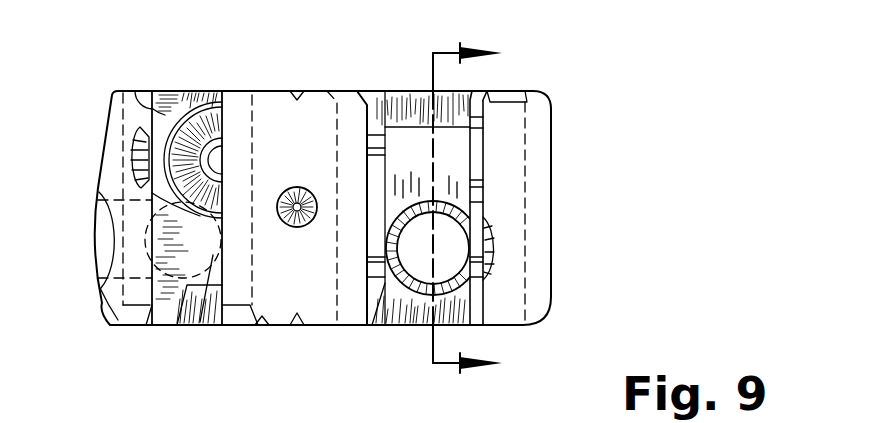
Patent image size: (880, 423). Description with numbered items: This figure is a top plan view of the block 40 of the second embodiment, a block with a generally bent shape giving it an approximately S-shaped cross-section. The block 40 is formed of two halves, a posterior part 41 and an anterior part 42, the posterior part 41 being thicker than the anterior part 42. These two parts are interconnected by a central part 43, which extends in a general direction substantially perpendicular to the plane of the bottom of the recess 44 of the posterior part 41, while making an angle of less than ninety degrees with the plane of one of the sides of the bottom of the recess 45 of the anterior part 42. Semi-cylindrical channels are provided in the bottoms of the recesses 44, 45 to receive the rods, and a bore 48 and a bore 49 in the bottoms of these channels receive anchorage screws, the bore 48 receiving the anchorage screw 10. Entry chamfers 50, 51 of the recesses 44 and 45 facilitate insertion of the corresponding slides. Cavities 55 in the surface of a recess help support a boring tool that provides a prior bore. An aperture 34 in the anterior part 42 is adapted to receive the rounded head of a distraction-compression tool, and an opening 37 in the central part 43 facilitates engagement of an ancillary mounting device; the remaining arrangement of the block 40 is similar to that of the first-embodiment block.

The anchorage screw 10 is at (468, 210).
The aperture 34 is at (107, 230).
The opening 37 is at (300, 186).
The block 40 is at (197, 338).
The posterior part 41 is at (556, 309).
The anterior part 42 is at (100, 307).
The central part 43 is at (282, 108).
The recess 44 is at (452, 153).
The recess 45 is at (205, 327).
The bore 48 is at (453, 260).
The bore 49 is at (143, 118).
The entry chamfer 50 is at (152, 327).
The entry chamfer 51 is at (481, 96).
The cavity 55 is at (493, 227).